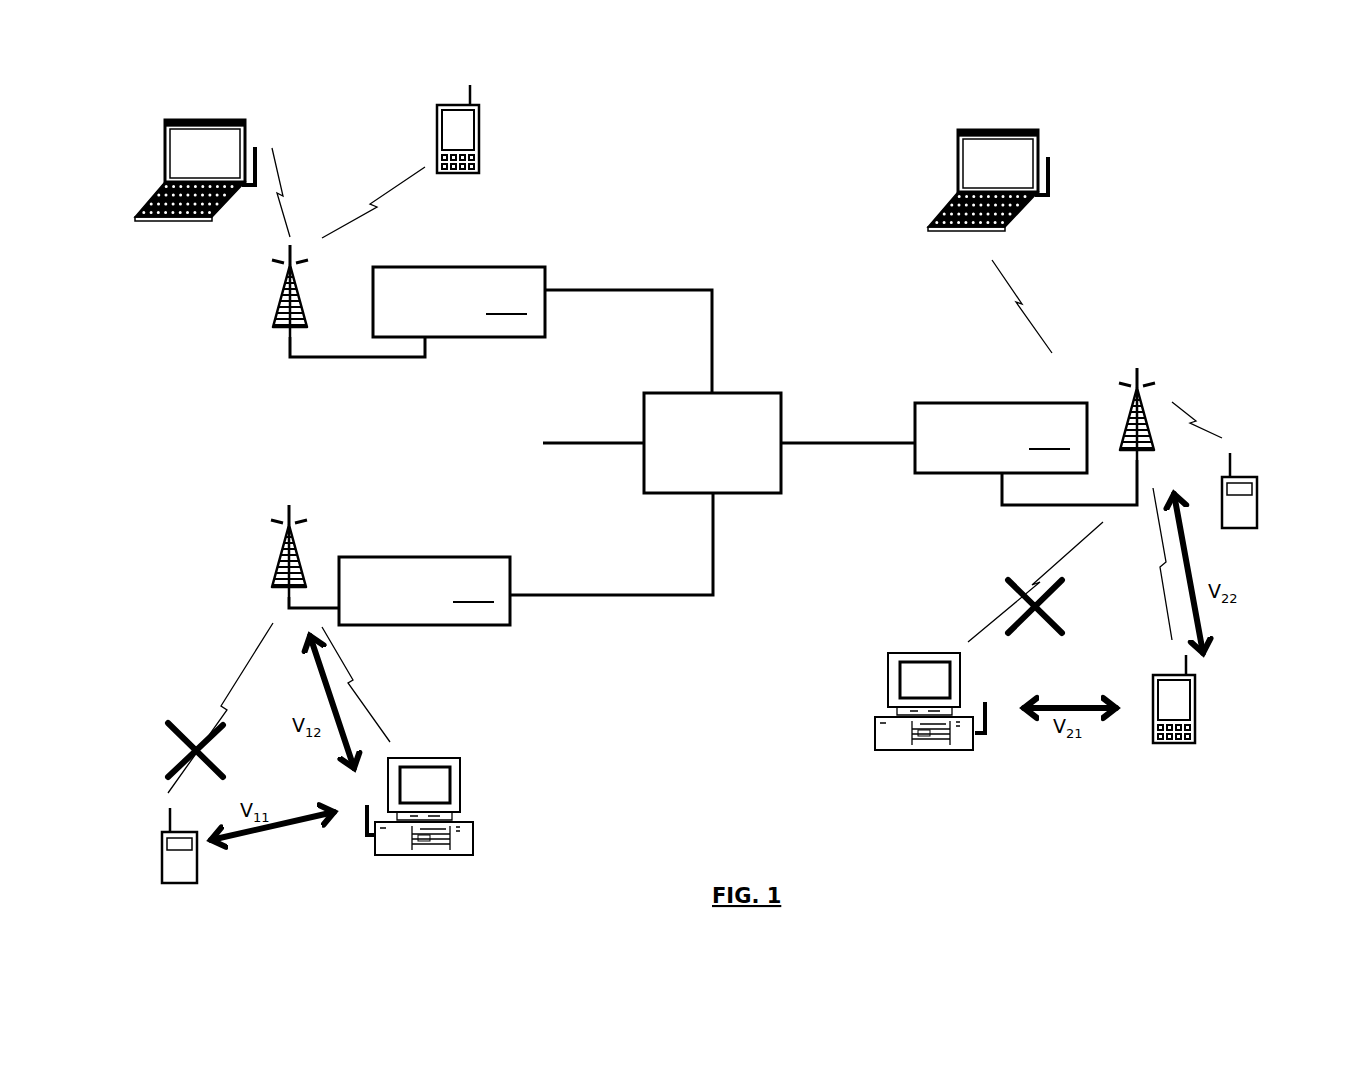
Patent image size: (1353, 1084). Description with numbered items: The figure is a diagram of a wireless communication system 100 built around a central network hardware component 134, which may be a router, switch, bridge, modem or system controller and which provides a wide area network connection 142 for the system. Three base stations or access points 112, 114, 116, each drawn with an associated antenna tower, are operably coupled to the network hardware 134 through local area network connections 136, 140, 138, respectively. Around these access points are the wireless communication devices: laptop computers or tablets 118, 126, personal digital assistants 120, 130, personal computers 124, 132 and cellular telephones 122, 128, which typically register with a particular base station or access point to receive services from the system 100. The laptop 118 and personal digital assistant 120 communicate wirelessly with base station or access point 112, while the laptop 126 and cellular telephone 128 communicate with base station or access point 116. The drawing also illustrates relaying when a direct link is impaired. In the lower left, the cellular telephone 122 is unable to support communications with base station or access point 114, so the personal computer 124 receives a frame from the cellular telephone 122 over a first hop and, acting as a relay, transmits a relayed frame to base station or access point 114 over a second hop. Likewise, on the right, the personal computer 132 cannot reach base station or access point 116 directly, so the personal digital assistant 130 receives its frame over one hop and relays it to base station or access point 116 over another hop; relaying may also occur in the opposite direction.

The wireless communication system 100 is at (1101, 132).
The base station or access point 112 is at (408, 301).
The base station or access point 114 is at (390, 565).
The base station or access point 116 is at (1035, 436).
The laptop computer 118 is at (153, 222).
The personal digital assistant 120 is at (457, 173).
The cellular telephone 122 is at (178, 885).
The personal computer 124 is at (430, 855).
The laptop computer 126 is at (958, 166).
The cellular telephone 128 is at (1223, 528).
The personal digital assistant 130 is at (1172, 743).
The personal computer 132 is at (898, 752).
The network hardware component 134 is at (743, 495).
The local area network connection 136 is at (610, 292).
The local area network connection 138 is at (830, 445).
The local area network connection 140 is at (577, 597).
The wide area network connection 142 is at (578, 443).